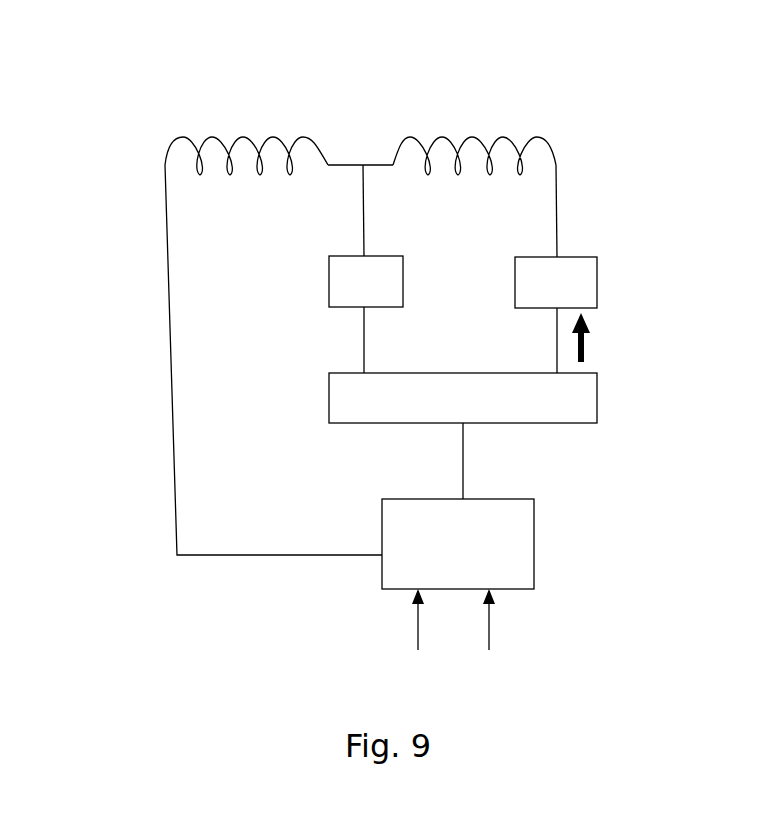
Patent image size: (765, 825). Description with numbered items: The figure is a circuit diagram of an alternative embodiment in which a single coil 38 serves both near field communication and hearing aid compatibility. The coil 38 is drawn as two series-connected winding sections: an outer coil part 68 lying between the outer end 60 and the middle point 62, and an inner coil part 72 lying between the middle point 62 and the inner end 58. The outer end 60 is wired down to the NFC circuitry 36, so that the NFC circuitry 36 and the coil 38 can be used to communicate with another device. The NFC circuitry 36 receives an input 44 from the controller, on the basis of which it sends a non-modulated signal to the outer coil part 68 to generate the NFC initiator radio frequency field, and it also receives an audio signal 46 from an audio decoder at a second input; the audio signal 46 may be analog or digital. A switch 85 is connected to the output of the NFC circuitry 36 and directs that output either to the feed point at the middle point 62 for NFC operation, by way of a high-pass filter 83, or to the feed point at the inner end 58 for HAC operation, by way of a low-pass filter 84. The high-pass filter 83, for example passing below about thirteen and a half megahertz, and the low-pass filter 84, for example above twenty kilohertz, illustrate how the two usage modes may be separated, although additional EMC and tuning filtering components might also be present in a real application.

The outer end (second connection point) 60 is at (165, 165).
The outer coil part 68 is at (222, 140).
The middle point (third connection point) 62 is at (360, 165).
The inner coil part 72 is at (487, 148).
The coil 38 is at (540, 132).
The inner end (first connection point) 58 is at (556, 165).
The high-pass filter 83 is at (329, 281).
The low-pass filter 84 is at (597, 291).
The switch 85 is at (568, 423).
The NFC circuitry 36 is at (382, 563).
The input 44 is at (418, 620).
The audio signal 46 is at (550, 634).